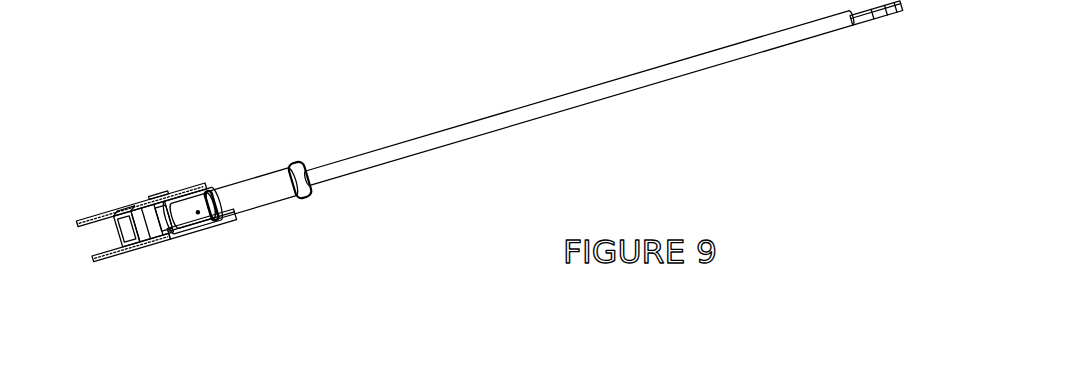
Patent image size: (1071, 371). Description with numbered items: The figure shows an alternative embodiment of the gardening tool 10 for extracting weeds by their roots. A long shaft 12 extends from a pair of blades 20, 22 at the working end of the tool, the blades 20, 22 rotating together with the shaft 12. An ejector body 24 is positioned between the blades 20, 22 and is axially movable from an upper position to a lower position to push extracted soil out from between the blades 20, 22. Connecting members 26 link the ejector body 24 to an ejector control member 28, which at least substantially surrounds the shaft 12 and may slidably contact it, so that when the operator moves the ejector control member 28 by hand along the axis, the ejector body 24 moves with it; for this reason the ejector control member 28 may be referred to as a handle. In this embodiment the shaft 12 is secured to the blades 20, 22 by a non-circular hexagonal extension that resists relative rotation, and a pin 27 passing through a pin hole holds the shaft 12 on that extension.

The gardening tool 10 is at (465, 173).
The shaft 12 is at (603, 89).
The blade 20 is at (148, 197).
The blade 22 is at (120, 252).
The ejector body 24 is at (130, 230).
The connecting members 26 is at (207, 218).
The pin 27 is at (198, 212).
The ejector control member 28 is at (250, 157).